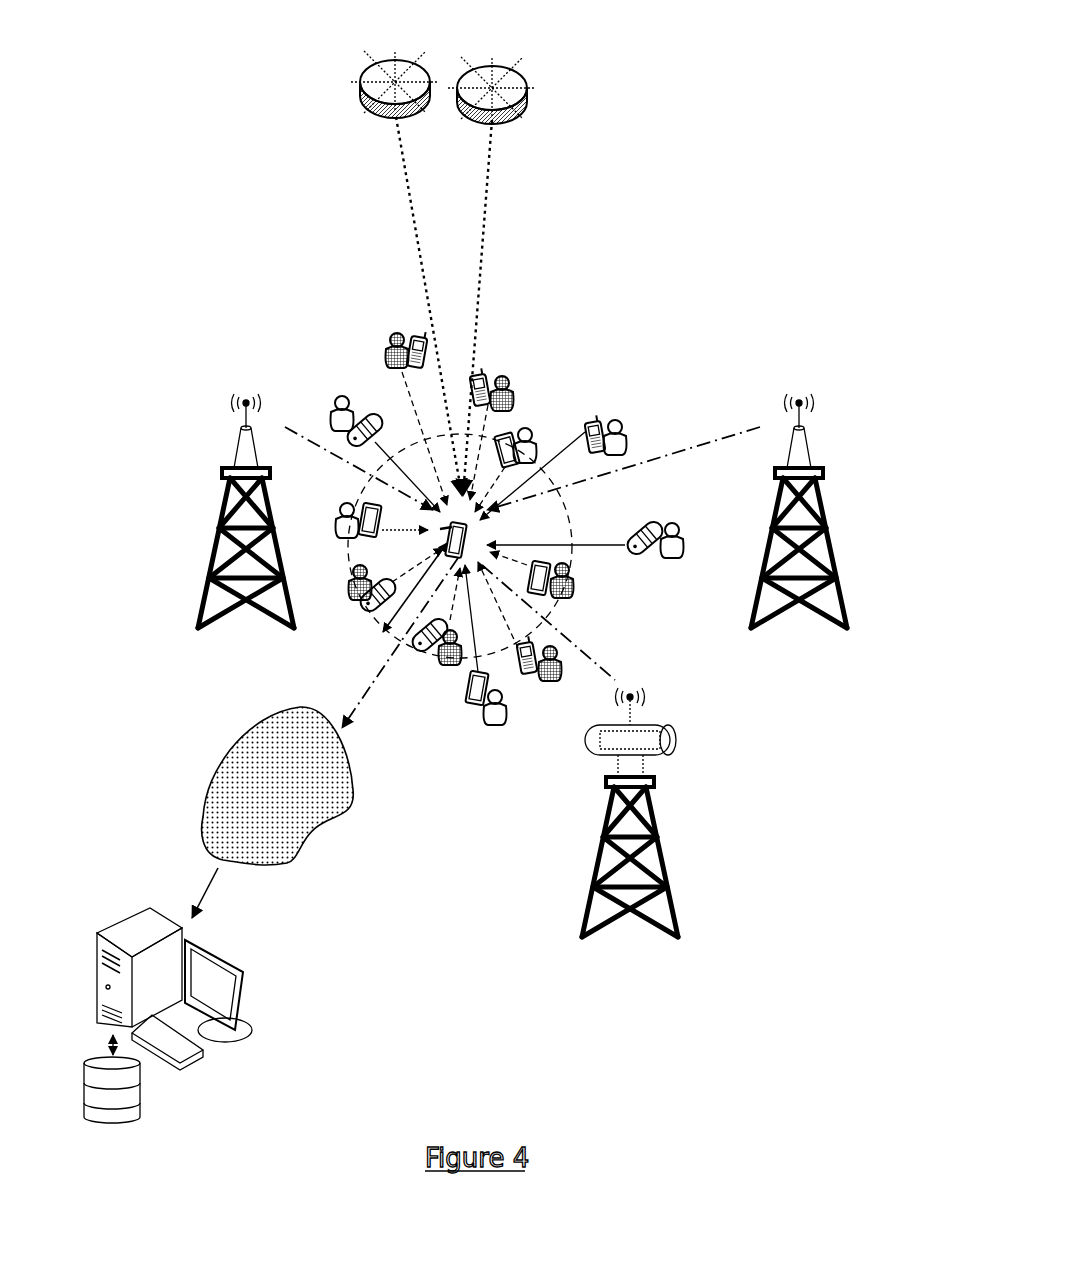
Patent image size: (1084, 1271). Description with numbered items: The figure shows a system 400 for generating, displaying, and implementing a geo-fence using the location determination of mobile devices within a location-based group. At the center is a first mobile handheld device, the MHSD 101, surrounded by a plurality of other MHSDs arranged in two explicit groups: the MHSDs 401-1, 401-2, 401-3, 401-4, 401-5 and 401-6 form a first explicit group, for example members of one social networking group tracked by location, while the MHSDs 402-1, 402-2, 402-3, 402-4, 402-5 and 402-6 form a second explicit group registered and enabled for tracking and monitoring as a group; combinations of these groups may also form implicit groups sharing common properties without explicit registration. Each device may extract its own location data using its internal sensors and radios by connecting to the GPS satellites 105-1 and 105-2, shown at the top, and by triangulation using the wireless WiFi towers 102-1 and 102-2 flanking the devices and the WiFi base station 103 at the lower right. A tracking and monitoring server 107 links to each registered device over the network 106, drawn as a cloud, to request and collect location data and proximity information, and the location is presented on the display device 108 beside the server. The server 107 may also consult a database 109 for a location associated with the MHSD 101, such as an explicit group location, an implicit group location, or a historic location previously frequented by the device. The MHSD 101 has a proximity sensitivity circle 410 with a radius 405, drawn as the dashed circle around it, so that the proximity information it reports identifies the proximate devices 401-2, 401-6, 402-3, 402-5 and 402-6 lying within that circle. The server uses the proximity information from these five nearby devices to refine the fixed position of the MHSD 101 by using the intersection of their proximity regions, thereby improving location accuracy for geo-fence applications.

The system 400 is at (720, 178).
The first mobile device (MHSD) 101 is at (482, 535).
The wireless (WiFi) tower 102-1 is at (800, 428).
The wireless (WiFi) tower 102-2 is at (240, 428).
The WiFi base station 103 is at (668, 752).
The GPS satellite 105-1 is at (382, 117).
The GPS satellite 105-2 is at (510, 120).
The network 106 is at (330, 830).
The tracking and monitoring server (TMSS) 107 is at (118, 905).
The display device 108 is at (245, 1005).
The database 109 is at (148, 1115).
The mobile device (MHSD) of first explicit group 401-1 is at (340, 398).
The mobile device (MHSD) of first explicit group 401-2 is at (530, 428).
The mobile device (MHSD) of first explicit group 401-3 is at (620, 420).
The mobile device (MHSD) of first explicit group 401-4 is at (670, 560).
The mobile device (MHSD) of first explicit group 401-5 is at (496, 727).
The mobile device (MHSD) of first explicit group 401-6 is at (342, 515).
The mobile device (MHSD) of second explicit group 402-1 is at (402, 330).
The mobile device (MHSD) of second explicit group 402-2 is at (494, 372).
The mobile device (MHSD) of second explicit group 402-3 is at (574, 598).
The mobile device (MHSD) of second explicit group 402-4 is at (552, 690).
The mobile device (MHSD) of second explicit group 402-5 is at (445, 660).
The mobile device (MHSD) of second explicit group 402-6 is at (348, 580).
The radius of proximity sensitivity circle 405 is at (382, 617).
The proximity sensitivity circle 410 is at (572, 524).